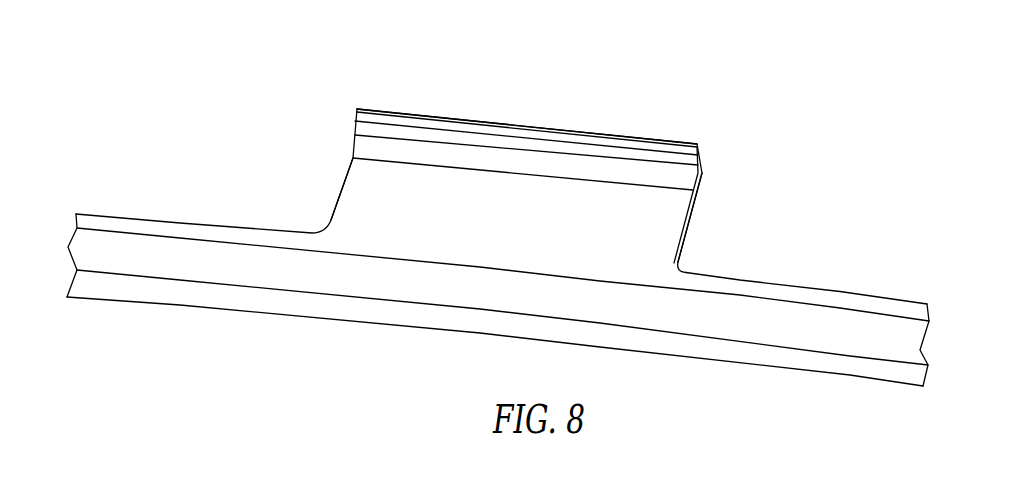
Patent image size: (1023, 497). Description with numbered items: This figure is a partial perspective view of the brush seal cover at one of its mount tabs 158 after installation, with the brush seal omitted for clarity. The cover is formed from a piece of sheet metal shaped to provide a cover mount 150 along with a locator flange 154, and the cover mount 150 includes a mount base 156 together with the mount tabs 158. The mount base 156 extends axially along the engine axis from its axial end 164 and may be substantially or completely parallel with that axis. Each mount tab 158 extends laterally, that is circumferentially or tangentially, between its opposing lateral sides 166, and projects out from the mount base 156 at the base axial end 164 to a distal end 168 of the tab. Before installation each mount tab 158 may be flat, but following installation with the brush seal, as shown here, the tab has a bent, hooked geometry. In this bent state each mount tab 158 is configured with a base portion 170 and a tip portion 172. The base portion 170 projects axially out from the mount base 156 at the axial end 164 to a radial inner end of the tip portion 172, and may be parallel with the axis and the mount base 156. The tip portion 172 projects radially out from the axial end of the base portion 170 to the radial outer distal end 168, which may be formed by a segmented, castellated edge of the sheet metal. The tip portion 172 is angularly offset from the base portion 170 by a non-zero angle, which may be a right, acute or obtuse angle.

The cover mount 150 is at (762, 268).
The locator flange 154 is at (925, 352).
The mount base 156 is at (136, 217).
The mount tab 158 is at (771, 133).
The axial end 164 is at (910, 302).
The lateral side 166 is at (343, 190).
The distal end 168 is at (393, 117).
The base portion 170 is at (490, 227).
The tip portion 172 is at (515, 123).